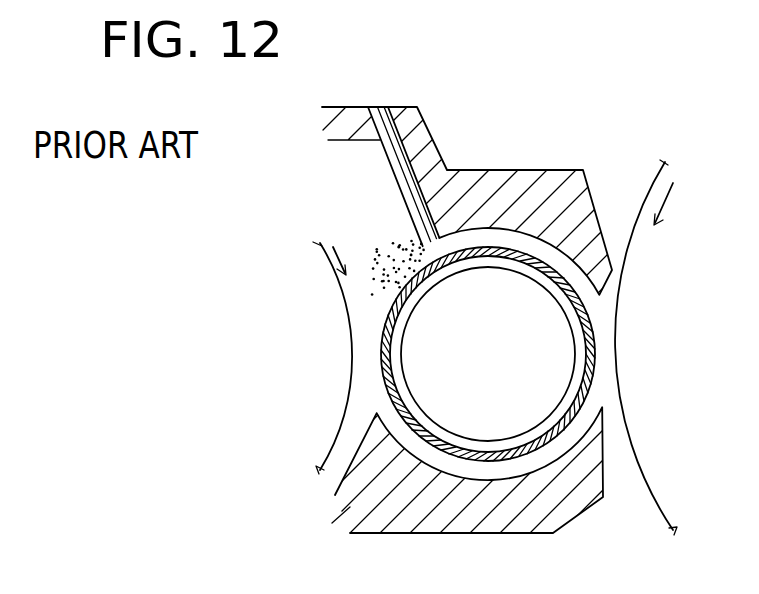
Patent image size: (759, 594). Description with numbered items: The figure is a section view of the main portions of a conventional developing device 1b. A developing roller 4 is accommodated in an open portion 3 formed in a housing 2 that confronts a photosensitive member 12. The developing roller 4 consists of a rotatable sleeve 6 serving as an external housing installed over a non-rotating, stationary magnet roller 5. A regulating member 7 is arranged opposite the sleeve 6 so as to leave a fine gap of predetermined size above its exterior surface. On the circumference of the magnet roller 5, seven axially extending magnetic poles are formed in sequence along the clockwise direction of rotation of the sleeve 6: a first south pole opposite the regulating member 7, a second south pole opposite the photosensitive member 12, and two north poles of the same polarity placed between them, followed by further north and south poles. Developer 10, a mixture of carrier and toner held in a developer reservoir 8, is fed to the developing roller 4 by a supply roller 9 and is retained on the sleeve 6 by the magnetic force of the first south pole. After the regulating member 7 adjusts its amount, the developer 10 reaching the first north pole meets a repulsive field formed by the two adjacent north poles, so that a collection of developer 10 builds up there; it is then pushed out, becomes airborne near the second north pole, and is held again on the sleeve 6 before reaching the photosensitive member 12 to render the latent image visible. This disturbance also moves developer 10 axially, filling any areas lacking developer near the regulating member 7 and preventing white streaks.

The developing device 1b is at (573, 170).
The housing 2 is at (573, 498).
The open portion 3 is at (600, 400).
The developing roller 4 is at (600, 315).
The magnet roller 5 is at (483, 278).
The sleeve 6 is at (507, 250).
The regulating member 7 is at (397, 183).
The developer reservoir 8 is at (293, 279).
The supply roller 9 is at (352, 338).
The developer 10 is at (398, 247).
The photosensitive member 12 is at (645, 473).